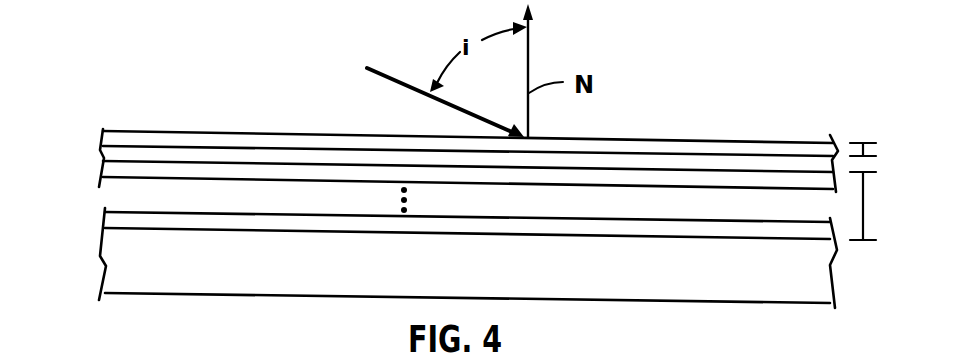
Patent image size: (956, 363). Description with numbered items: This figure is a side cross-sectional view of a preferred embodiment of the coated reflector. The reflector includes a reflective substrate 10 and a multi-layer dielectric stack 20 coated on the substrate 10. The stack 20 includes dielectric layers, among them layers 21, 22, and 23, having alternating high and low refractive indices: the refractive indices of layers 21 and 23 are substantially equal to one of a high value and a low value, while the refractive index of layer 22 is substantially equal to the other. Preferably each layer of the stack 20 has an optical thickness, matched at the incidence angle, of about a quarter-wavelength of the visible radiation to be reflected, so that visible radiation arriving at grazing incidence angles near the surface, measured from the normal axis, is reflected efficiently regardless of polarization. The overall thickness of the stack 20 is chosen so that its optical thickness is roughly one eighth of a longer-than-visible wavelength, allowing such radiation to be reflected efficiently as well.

The reflective substrate 10 is at (231, 274).
The multi-layer dielectric stack 20 is at (436, 137).
The dielectric layer 21 is at (137, 138).
The dielectric layer 22 is at (207, 155).
The dielectric layer 23 is at (275, 173).